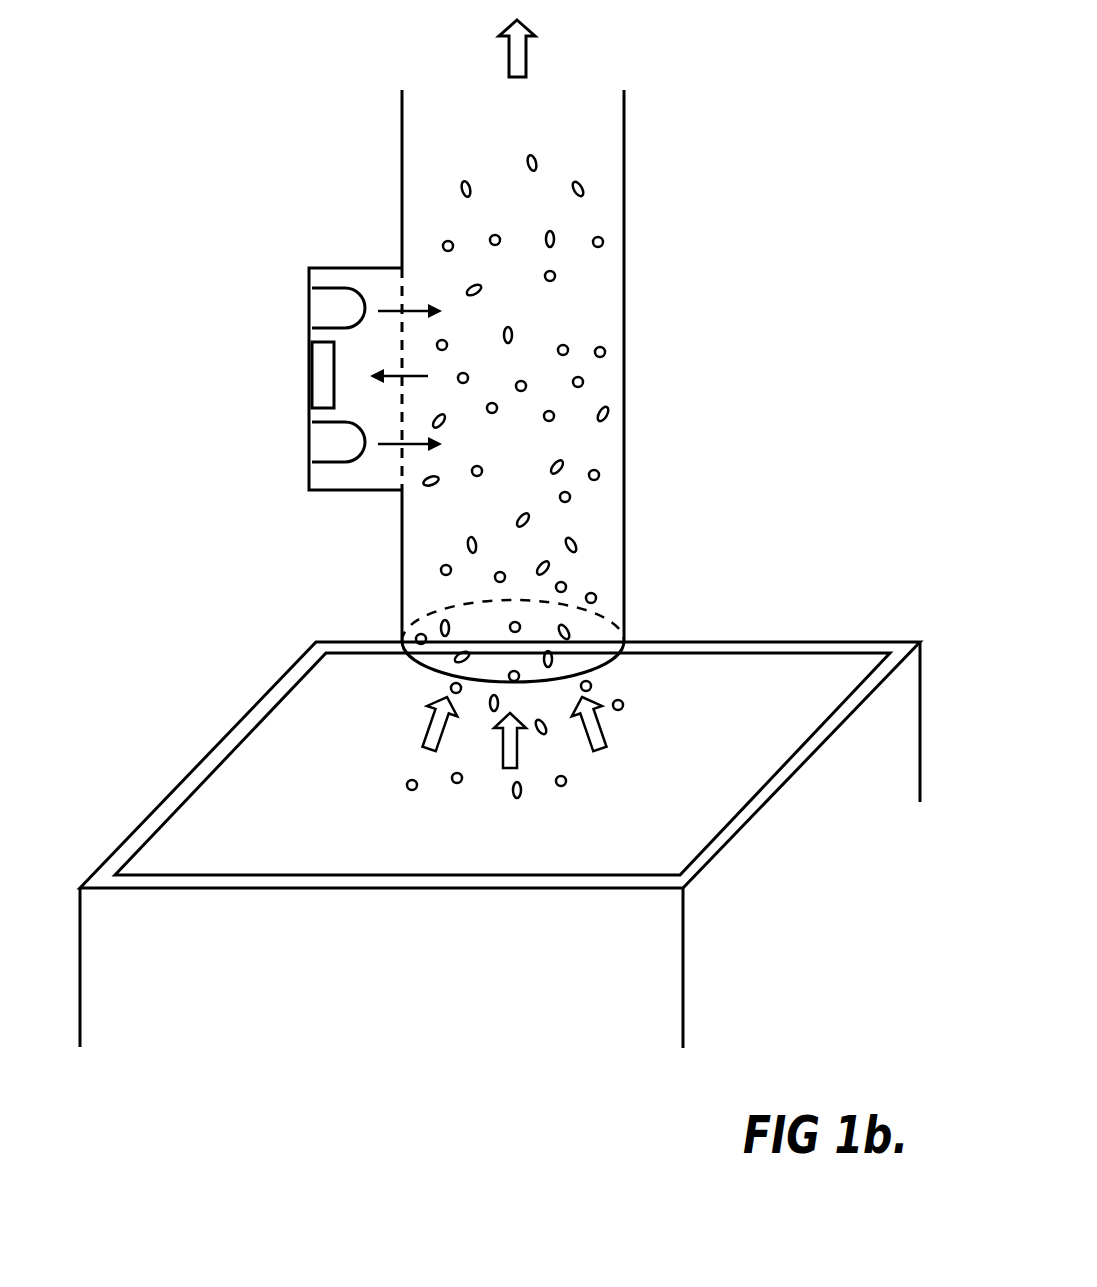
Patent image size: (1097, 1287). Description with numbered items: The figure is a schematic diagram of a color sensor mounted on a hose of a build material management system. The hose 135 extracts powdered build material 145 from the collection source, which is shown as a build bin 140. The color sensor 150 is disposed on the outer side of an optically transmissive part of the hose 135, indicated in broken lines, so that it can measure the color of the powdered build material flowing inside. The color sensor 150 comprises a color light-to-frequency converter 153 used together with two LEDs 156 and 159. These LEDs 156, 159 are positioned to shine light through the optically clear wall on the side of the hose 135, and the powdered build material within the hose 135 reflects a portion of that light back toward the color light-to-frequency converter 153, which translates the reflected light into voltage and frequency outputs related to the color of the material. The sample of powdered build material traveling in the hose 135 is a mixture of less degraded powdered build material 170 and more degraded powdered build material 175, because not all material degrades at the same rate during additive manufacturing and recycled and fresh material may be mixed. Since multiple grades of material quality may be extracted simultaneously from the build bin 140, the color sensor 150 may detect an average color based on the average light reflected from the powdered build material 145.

The hose 135 is at (625, 143).
The color sensor 150 is at (317, 340).
The LED 156 is at (320, 303).
The color light-to-frequency converter 153 is at (320, 369).
The LED 159 is at (325, 440).
The less degraded powdered build material 170 is at (605, 352).
The more degraded powdered build material 175 is at (607, 414).
The powdered build material 145 is at (822, 665).
The build bin 140 is at (364, 983).